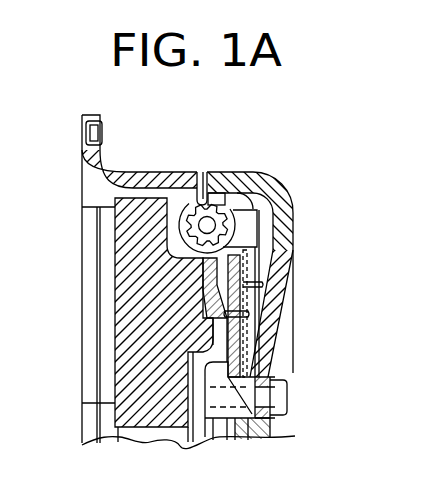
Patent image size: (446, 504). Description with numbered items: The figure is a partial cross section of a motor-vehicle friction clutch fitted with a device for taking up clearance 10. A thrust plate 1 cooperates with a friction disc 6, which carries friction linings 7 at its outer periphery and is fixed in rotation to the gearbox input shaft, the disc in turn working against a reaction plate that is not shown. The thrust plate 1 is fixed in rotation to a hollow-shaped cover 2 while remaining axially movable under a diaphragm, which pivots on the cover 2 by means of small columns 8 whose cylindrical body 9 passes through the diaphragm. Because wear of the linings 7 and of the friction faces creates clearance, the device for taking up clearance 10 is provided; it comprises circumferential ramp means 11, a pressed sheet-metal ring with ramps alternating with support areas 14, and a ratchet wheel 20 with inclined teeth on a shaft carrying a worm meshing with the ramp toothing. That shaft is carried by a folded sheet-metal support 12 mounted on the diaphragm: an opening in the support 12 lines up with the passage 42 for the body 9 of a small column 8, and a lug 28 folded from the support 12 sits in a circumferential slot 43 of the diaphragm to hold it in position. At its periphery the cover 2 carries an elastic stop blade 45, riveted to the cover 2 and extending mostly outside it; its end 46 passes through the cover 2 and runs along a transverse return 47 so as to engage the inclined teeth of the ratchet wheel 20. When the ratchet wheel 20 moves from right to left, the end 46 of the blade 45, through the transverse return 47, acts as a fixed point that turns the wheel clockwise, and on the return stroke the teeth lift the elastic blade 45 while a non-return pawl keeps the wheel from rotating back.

The thrust plate 1 is at (113, 230).
The cover 2 is at (235, 169).
The friction disc 6 is at (96, 443).
The friction linings 7 is at (108, 350).
The small column 8 is at (291, 391).
The cylindrical body 9 is at (272, 423).
The device for taking up clearance 10 is at (238, 191).
The ramp means 11 is at (204, 291).
The support 12 is at (263, 228).
The support areas 14 is at (258, 272).
The ratchet wheel 20 is at (233, 209).
The lug 28 is at (240, 303).
The passage 42 is at (262, 374).
The slot 43 is at (244, 315).
The elastic stop blade 45 is at (143, 169).
The end 46 is at (216, 169).
The transverse return 47 is at (196, 196).